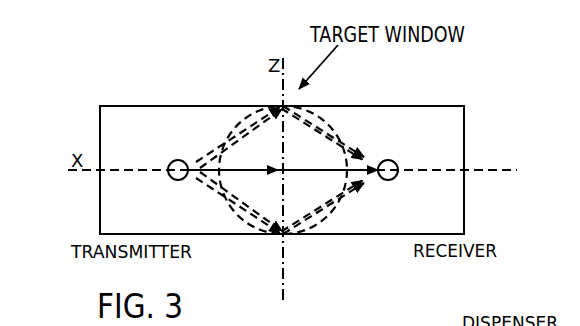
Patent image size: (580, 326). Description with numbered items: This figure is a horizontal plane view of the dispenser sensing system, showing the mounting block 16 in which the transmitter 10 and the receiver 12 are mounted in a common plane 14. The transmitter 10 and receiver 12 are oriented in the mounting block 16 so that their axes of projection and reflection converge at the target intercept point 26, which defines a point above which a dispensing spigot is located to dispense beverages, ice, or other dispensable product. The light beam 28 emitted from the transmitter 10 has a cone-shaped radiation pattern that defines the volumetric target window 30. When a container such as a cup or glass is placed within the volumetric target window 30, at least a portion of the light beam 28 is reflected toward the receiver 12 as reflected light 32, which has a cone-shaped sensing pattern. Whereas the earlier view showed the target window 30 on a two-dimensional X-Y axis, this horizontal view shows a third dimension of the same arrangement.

The transmitter 10 is at (170, 162).
The receiver 12 is at (396, 178).
The plane 14 is at (439, 146).
The mounting block 16 is at (481, 91).
The target intercept point 26 is at (284, 173).
The light beam 28 is at (212, 156).
The volumetric target window 30 is at (298, 209).
The reflected light 32 is at (358, 152).